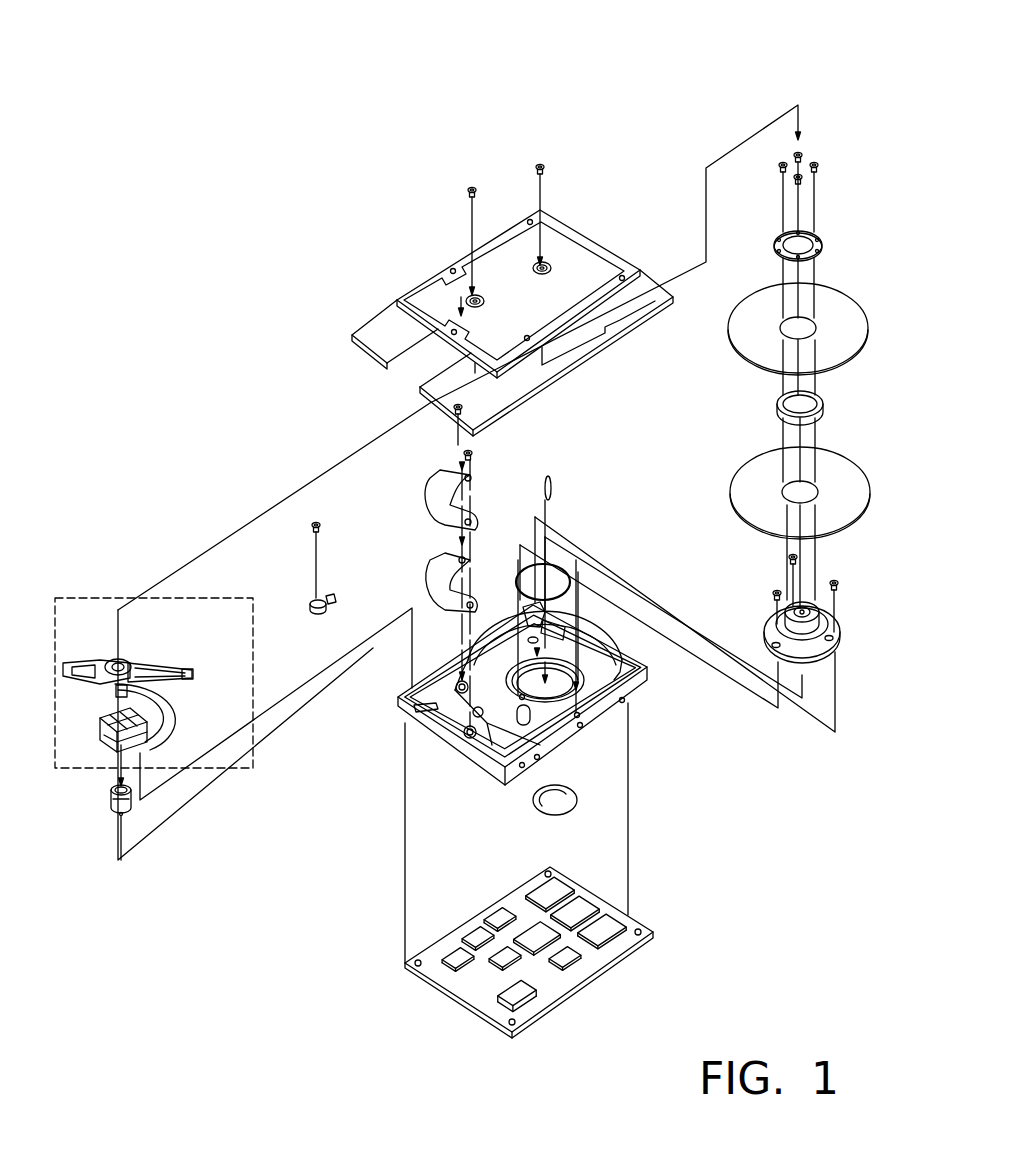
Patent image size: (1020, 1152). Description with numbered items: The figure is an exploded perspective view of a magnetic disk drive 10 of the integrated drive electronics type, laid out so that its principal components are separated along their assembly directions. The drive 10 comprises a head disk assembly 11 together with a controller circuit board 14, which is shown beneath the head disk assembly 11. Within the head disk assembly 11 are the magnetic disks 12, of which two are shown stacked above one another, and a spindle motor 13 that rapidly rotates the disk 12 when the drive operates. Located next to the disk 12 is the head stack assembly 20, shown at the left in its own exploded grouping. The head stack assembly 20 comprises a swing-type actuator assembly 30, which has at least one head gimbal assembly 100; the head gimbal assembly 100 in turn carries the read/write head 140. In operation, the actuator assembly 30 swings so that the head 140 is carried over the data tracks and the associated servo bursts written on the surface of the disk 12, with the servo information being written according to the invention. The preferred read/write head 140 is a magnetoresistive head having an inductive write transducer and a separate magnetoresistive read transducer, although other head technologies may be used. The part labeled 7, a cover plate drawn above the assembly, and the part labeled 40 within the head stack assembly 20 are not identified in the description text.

The magnetic disk drive 10 is at (272, 72).
The top cover 7 is at (424, 283).
The head disk assembly 11 is at (732, 862).
The magnetic disk 12 is at (740, 470).
The spindle motor 13 is at (768, 628).
The controller circuit board 14 is at (578, 987).
The head stack assembly 20 is at (90, 597).
The swing-type actuator assembly 30 is at (62, 658).
The pivot bearing 40 is at (122, 662).
The head gimbal assembly 100 is at (177, 662).
The read/write head 140 is at (195, 673).